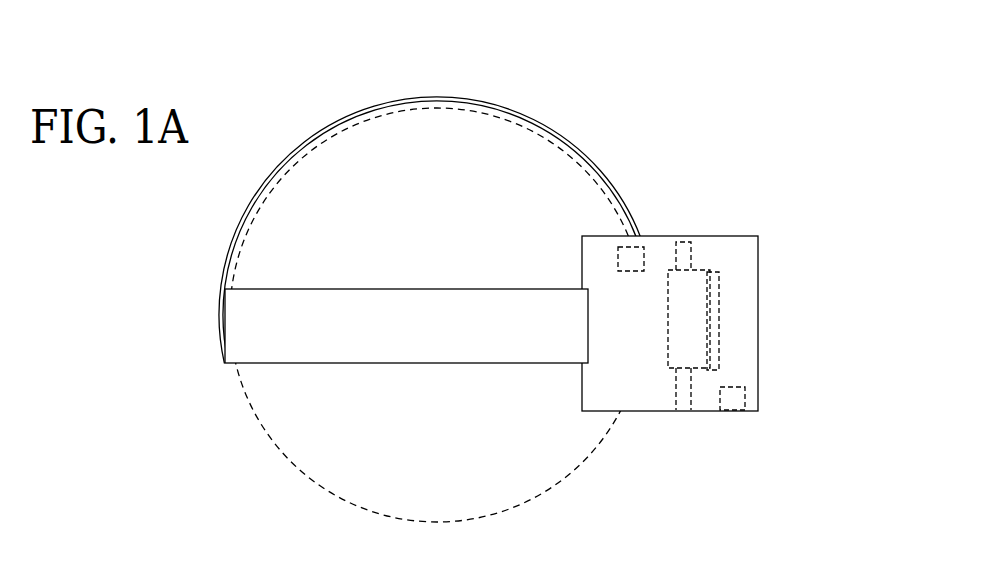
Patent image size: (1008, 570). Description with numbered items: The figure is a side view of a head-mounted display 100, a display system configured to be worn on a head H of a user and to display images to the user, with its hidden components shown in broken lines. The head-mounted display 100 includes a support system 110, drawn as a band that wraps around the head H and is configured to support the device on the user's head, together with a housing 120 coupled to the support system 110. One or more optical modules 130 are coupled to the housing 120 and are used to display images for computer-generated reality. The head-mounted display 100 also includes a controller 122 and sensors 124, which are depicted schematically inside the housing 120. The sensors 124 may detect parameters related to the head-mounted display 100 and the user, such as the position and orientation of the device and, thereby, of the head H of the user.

The head-mounted display 100 is at (670, 88).
The support system 110 is at (580, 149).
The housing 120 is at (758, 263).
The controller 122 is at (720, 398).
The sensors 124 is at (645, 252).
The optical module 130 is at (718, 327).
The head H is at (258, 423).